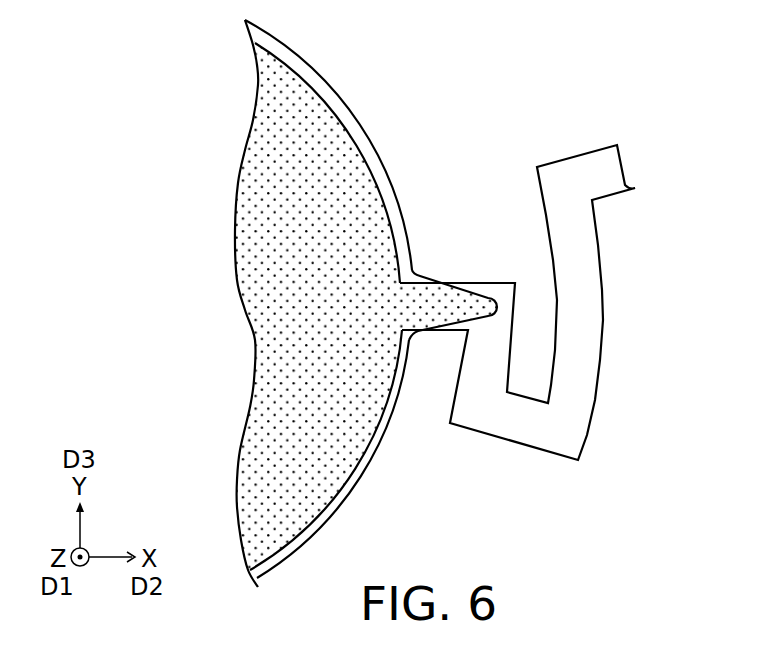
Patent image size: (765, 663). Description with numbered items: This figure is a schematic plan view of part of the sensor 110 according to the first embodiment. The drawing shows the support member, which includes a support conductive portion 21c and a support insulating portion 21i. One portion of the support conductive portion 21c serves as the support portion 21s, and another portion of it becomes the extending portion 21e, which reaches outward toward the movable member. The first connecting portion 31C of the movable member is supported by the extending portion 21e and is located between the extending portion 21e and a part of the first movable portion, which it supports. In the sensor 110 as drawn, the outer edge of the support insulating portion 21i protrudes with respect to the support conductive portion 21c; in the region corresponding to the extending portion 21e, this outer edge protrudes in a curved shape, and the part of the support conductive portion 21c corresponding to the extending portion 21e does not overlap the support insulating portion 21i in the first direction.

The sensor 110 is at (576, 122).
The support portion 21s is at (305, 82).
The support conductive portion 21c is at (318, 128).
The support insulating portion 21i is at (365, 143).
The extending portion 21e is at (510, 274).
The first connecting portion 31C is at (513, 425).